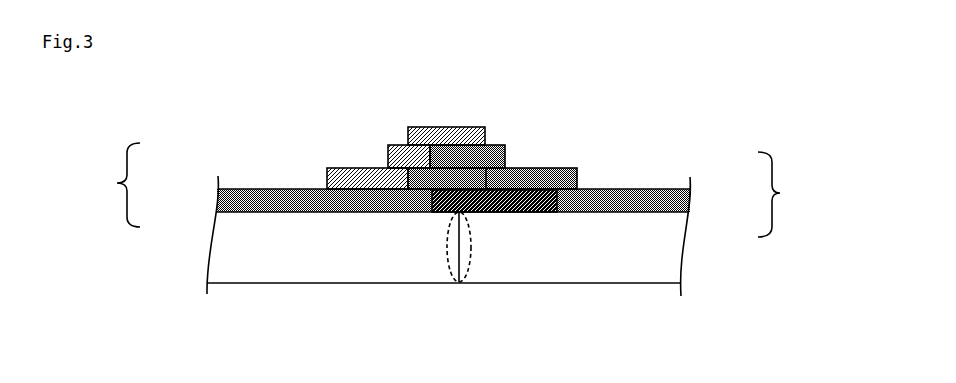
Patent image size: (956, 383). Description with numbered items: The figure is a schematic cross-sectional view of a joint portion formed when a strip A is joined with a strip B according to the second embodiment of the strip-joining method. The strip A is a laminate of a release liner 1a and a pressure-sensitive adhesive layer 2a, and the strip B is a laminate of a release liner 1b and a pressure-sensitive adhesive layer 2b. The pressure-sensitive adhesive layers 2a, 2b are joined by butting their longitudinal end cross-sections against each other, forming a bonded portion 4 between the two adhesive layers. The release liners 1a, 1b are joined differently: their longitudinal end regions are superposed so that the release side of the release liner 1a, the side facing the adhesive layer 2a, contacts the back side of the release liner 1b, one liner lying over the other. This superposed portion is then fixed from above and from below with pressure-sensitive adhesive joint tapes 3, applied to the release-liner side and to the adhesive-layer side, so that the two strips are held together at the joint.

The release liner 1a is at (670, 202).
The release liner 1b is at (222, 193).
The pressure-sensitive adhesive layer 2a is at (672, 263).
The pressure-sensitive adhesive layer 2b is at (232, 258).
The joint tape 3 is at (507, 190).
The bonded portion 4 is at (470, 267).
The strip A is at (780, 194).
The strip B is at (117, 185).